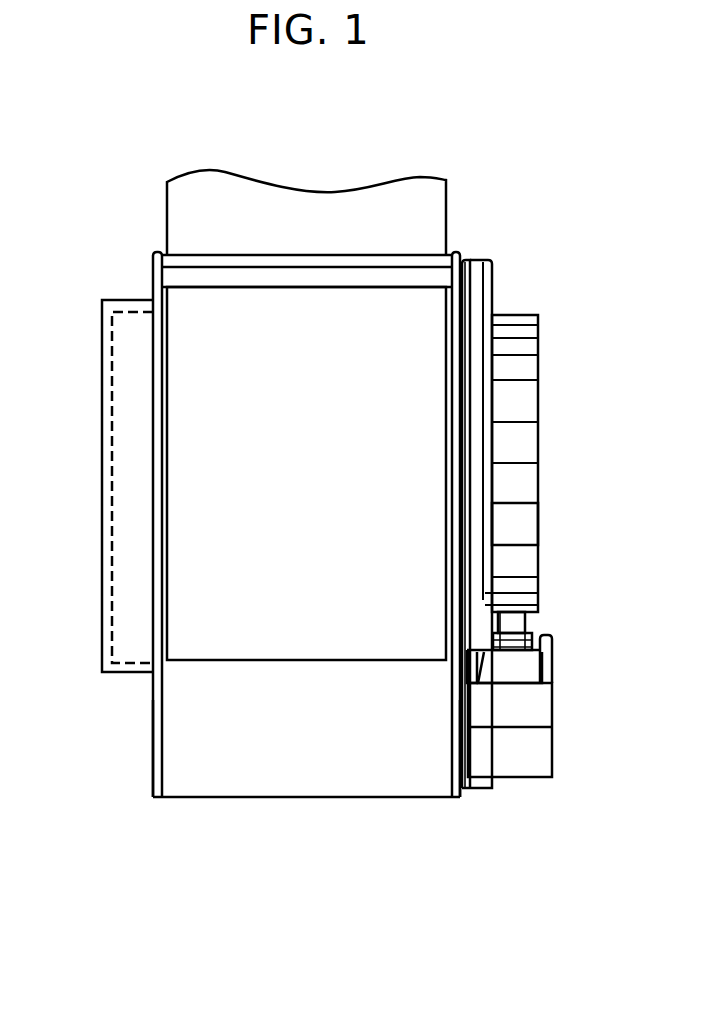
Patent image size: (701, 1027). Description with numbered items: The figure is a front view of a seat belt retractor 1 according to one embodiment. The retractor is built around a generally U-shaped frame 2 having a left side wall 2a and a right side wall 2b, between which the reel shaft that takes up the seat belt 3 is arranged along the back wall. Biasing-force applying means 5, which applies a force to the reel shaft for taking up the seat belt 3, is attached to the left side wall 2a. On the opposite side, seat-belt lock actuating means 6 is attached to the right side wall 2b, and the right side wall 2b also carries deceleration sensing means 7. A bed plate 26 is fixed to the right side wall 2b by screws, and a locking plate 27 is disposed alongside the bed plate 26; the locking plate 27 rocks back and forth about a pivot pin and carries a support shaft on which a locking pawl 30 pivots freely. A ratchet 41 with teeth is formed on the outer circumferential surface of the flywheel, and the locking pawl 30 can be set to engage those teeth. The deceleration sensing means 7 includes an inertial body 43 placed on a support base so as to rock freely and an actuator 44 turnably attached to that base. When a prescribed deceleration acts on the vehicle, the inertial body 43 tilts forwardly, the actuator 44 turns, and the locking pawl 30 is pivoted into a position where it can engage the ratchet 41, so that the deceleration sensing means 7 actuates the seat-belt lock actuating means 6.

The seat belt retractor 1 is at (146, 214).
The frame 2 is at (152, 272).
The left side wall 2a is at (157, 800).
The right side wall 2b is at (455, 800).
The seat belt 3 is at (437, 193).
The biasing-force applying means 5 is at (94, 458).
The seat-belt lock actuating means 6 is at (548, 427).
The deceleration sensing means 7 is at (568, 729).
The bed plate 26 is at (476, 262).
The locking plate 27 is at (493, 285).
The locking pawl 30 is at (507, 622).
The ratchet 41 is at (524, 512).
The inertial body 43 is at (527, 673).
The actuator 44 is at (527, 649).